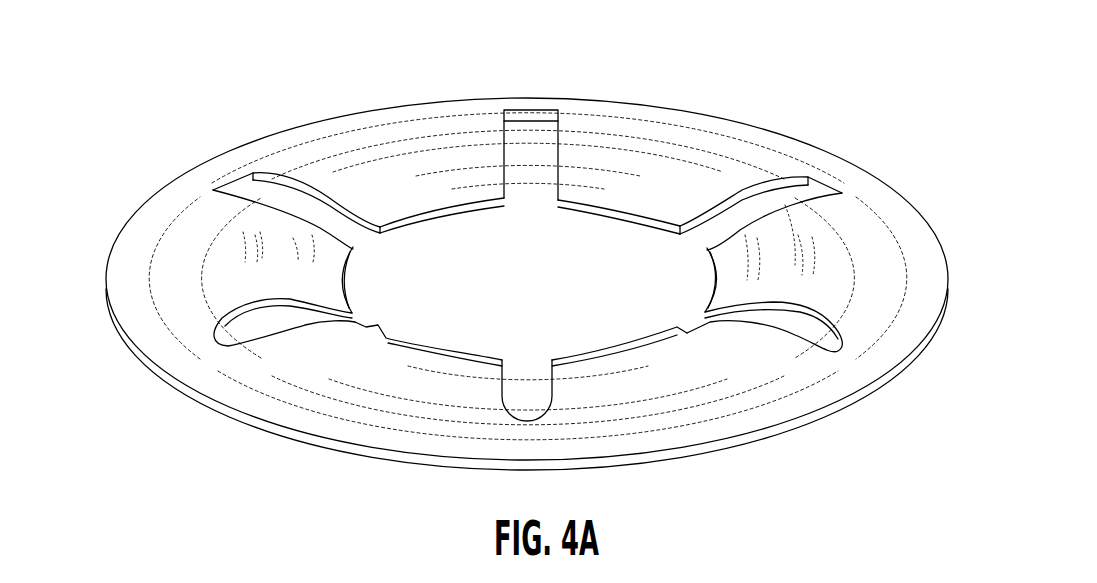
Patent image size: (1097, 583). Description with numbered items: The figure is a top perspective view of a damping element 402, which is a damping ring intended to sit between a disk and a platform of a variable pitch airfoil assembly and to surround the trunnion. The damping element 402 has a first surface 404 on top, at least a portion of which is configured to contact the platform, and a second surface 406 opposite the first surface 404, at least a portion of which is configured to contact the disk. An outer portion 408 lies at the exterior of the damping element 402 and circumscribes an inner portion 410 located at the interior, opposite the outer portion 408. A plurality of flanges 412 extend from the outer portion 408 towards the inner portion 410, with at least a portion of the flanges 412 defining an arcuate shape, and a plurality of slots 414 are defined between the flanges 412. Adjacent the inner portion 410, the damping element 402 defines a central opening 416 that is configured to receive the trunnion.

The damping element 402 is at (797, 40).
The first surface 404 is at (650, 137).
The second surface 406 is at (794, 430).
The outer portion 408 is at (951, 260).
The inner portion 410 is at (713, 287).
The flanges 412 is at (422, 165).
The slots 414 is at (528, 138).
The central opening 416 is at (436, 277).